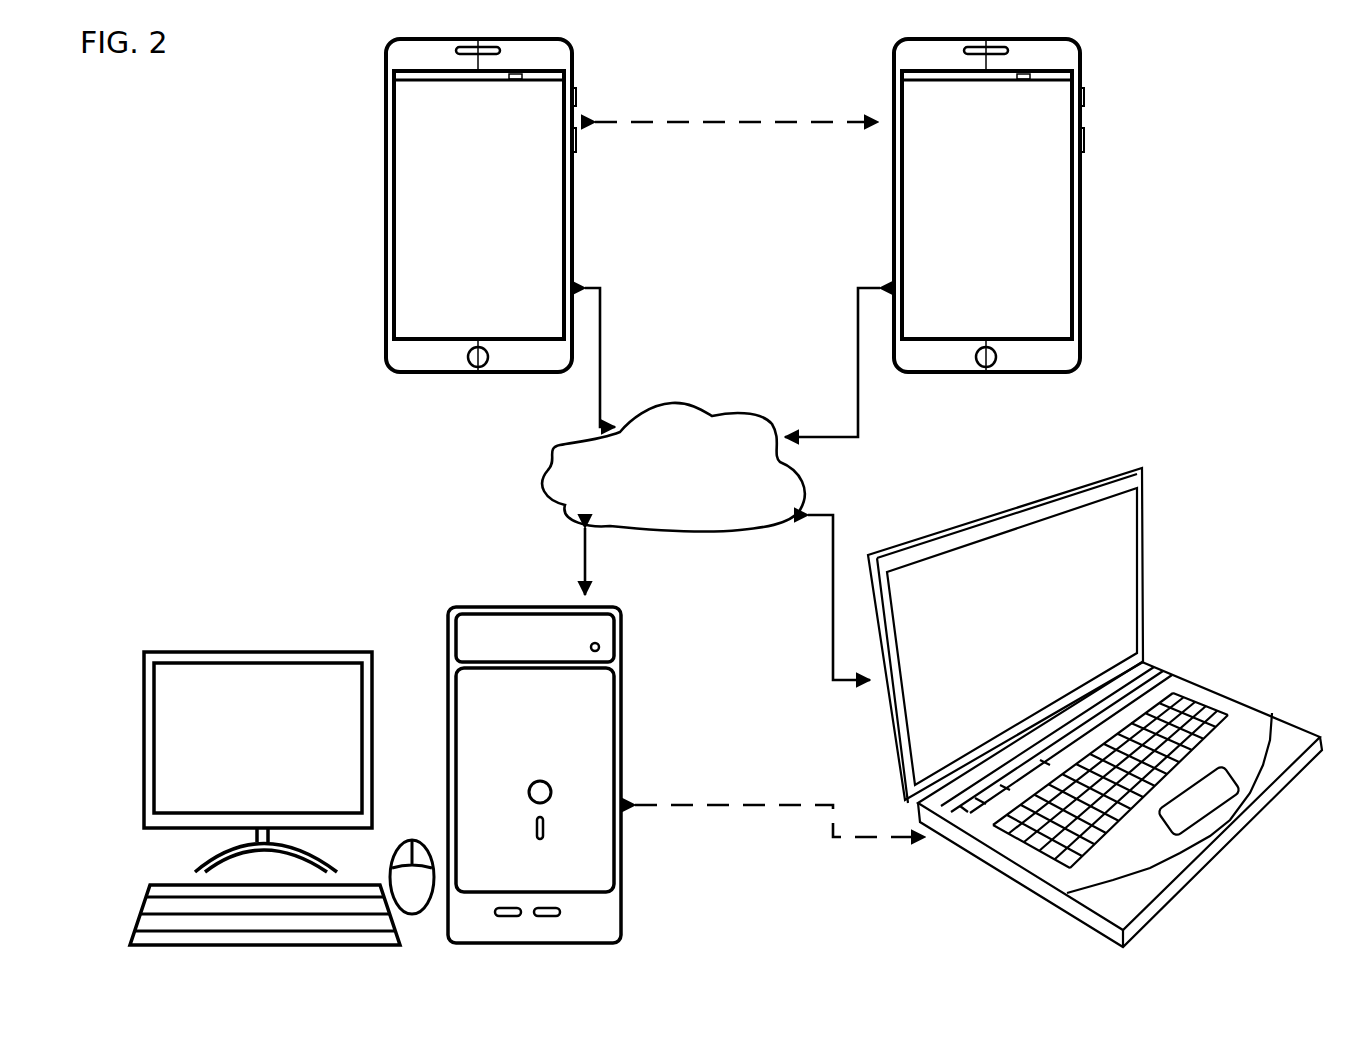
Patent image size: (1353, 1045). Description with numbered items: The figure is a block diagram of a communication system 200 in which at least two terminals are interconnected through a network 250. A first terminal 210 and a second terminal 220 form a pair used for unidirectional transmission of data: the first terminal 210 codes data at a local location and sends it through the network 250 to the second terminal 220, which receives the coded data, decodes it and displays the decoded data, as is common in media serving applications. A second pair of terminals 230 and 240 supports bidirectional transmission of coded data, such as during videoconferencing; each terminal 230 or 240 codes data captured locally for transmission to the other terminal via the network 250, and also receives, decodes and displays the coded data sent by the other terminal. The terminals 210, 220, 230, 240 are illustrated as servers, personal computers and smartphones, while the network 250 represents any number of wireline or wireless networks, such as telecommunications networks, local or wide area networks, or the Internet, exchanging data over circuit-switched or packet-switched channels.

The communication system 200 is at (262, 103).
The first terminal 210 is at (1143, 548).
The second terminal 220 is at (627, 897).
The terminal 230 is at (385, 154).
The terminal 240 is at (893, 154).
The network 250 is at (673, 467).